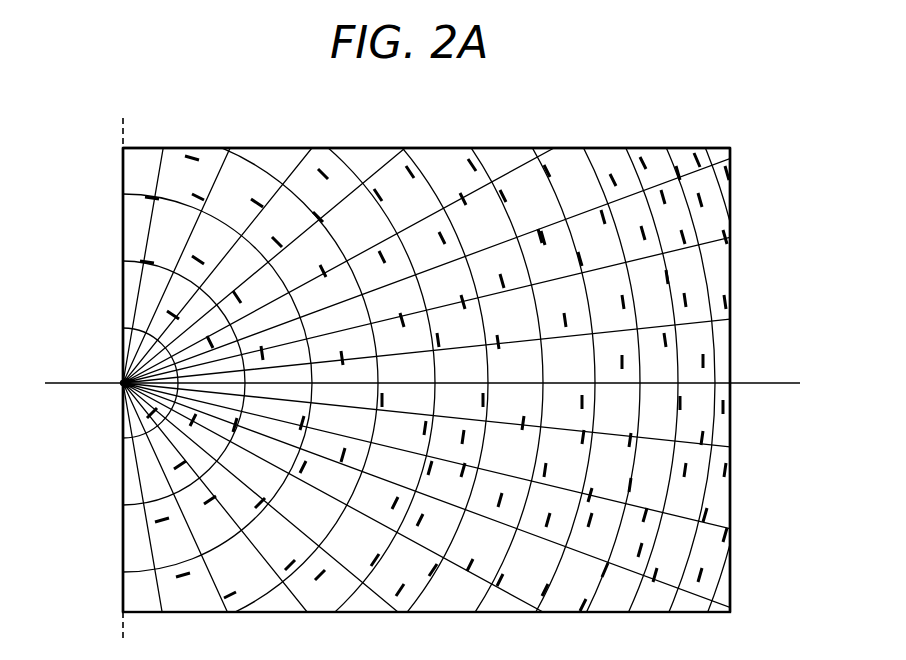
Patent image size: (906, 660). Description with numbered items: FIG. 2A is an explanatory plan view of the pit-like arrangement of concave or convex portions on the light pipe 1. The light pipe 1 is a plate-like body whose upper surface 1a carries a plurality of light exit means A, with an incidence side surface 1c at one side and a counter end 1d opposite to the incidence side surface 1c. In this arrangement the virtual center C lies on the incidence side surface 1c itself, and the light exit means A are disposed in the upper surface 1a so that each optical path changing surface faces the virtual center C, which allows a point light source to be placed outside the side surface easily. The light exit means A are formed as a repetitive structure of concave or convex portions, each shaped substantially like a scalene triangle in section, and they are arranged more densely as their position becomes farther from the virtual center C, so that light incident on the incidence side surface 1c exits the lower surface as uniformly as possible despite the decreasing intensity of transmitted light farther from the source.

The light pipe 1 is at (688, 126).
The upper surface 1a is at (443, 148).
The incidence side surface 1c is at (123, 233).
The counter end 1d is at (730, 282).
The light exit means A is at (329, 170).
The virtual center C is at (123, 383).